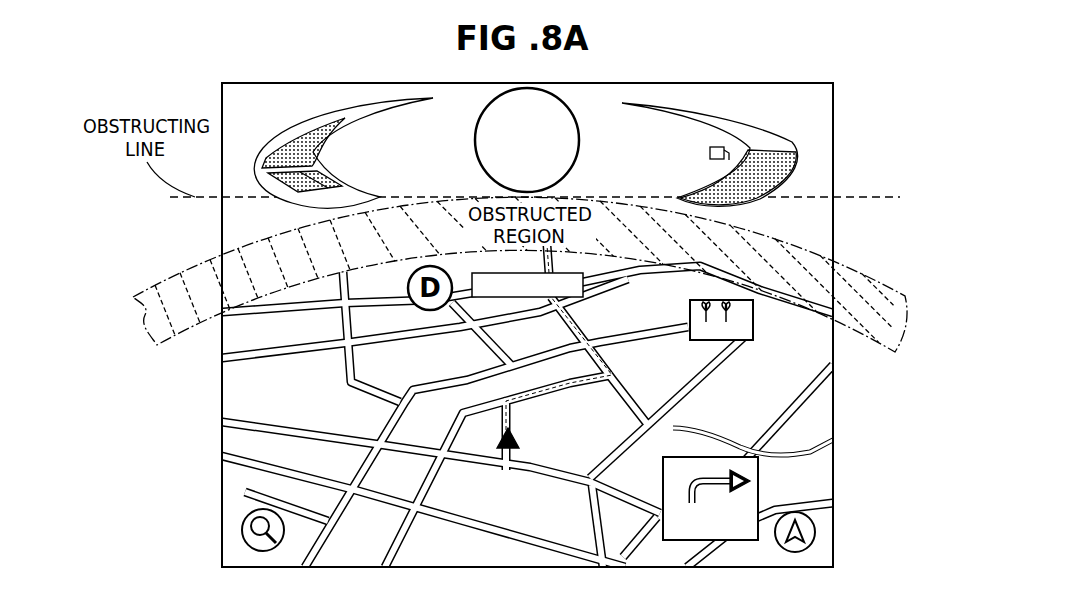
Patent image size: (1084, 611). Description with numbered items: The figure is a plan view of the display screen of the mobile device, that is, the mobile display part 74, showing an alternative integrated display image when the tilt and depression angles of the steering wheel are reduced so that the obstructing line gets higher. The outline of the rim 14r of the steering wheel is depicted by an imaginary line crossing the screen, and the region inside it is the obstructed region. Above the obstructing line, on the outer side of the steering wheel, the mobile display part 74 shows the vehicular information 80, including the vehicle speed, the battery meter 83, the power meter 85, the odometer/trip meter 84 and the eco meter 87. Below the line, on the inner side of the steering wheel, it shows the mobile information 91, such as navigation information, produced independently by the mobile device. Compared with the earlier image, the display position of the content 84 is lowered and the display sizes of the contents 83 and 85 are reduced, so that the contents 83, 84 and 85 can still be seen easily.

The mobile display part 74 is at (742, 83).
The vehicular information 80 is at (802, 142).
The battery meter 83 is at (742, 132).
The odometer/trip meter 84 is at (588, 293).
The power meter 85 is at (343, 119).
The eco meter 87 is at (757, 330).
The mobile information 91 is at (806, 416).
The rim 14r is at (174, 345).